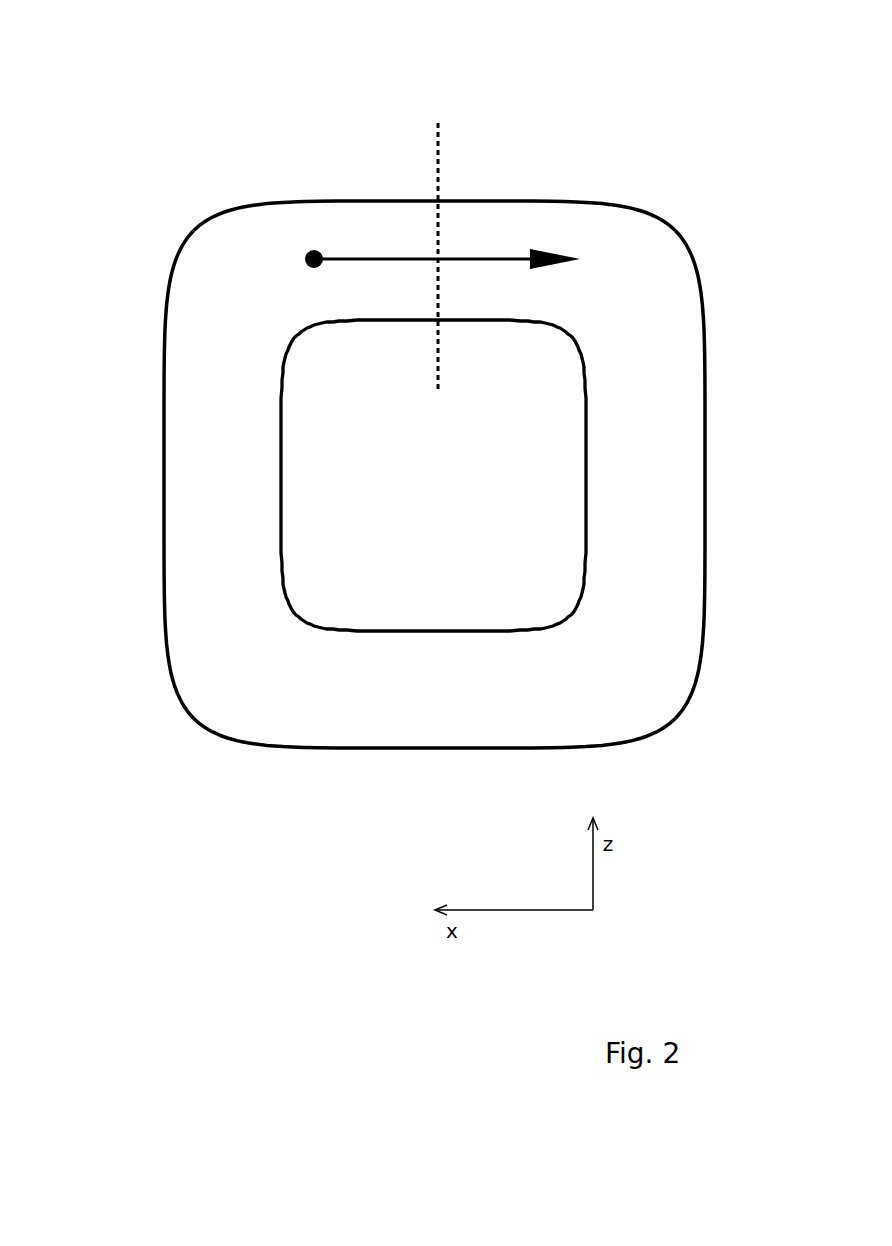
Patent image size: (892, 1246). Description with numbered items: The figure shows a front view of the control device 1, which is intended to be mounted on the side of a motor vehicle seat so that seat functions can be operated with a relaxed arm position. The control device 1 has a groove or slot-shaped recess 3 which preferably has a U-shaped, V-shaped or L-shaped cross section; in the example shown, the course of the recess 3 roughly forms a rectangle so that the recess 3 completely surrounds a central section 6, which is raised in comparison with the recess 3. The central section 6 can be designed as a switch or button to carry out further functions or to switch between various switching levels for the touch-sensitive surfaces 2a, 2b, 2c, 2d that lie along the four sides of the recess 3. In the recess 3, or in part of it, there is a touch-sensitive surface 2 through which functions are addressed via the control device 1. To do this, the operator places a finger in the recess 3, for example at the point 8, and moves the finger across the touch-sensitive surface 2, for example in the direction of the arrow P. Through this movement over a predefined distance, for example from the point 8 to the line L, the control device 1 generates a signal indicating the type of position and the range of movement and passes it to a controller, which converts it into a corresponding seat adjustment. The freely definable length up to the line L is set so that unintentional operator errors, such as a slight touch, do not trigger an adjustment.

The control device 1 is at (221, 812).
The touch-sensitive surface 2 is at (670, 572).
The touch-sensitive surface 2a is at (568, 220).
The touch-sensitive surface 2b is at (185, 498).
The touch-sensitive surface 2c is at (423, 727).
The touch-sensitive surface 2d is at (675, 413).
The recess 3 is at (707, 320).
The central section 6 is at (426, 521).
The point 8 is at (309, 250).
The line L is at (438, 160).
The arrow P is at (480, 255).